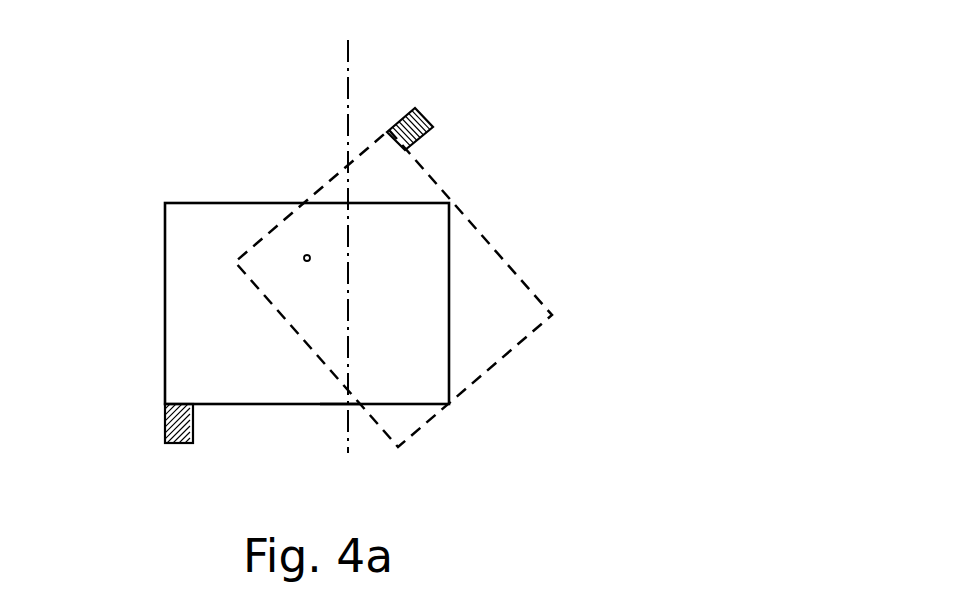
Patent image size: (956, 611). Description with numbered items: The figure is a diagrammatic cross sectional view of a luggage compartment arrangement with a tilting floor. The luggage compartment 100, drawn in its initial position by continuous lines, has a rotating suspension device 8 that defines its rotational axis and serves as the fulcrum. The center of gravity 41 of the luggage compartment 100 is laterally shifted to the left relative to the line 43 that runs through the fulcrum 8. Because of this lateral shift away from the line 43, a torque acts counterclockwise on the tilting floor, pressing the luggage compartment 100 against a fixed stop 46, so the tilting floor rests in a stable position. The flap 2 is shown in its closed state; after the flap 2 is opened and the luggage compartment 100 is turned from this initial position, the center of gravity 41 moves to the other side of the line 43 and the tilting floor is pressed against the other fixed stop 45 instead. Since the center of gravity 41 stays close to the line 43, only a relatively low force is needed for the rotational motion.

The luggage compartment 100 is at (195, 275).
The line 43 is at (345, 82).
The flap 2 is at (449, 262).
The center of gravity 41 is at (307, 255).
The fixed stop 45 is at (430, 120).
The fixed stop 46 is at (178, 423).
The rotating suspension device 8 is at (340, 410).